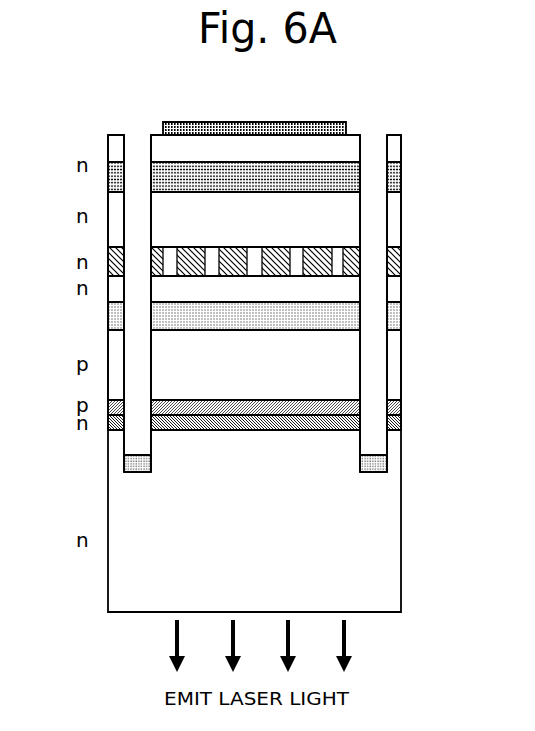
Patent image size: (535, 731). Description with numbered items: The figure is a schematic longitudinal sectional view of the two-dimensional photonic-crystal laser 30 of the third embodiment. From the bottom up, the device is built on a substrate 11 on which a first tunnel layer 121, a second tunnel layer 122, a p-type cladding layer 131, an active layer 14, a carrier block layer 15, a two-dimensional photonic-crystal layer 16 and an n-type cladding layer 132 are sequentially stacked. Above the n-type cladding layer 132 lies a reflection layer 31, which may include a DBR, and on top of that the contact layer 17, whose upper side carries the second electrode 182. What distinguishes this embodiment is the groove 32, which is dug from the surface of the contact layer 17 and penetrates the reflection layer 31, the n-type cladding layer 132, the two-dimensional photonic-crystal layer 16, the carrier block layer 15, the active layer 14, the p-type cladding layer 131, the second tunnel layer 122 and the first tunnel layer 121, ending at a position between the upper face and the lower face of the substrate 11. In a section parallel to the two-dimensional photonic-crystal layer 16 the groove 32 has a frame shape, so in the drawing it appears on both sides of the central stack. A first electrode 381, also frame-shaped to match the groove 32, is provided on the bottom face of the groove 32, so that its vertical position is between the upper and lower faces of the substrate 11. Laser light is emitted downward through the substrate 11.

The substrate 11 is at (392, 512).
The active layer 14 is at (400, 316).
The carrier block layer 15 is at (393, 292).
The two-dimensional photonic-crystal layer 16 is at (400, 262).
The contact layer 17 is at (393, 153).
The two-dimensional photonic-crystal laser 30 is at (435, 598).
The reflection layer 31 is at (400, 178).
The groove 32 is at (137, 152).
The first tunnel layer 121 is at (400, 425).
The second tunnel layer 122 is at (393, 407).
The p-type cladding layer 131 is at (393, 370).
The n-type cladding layer 132 is at (393, 215).
The second electrode 182 is at (265, 121).
The first electrode 381 is at (135, 465).